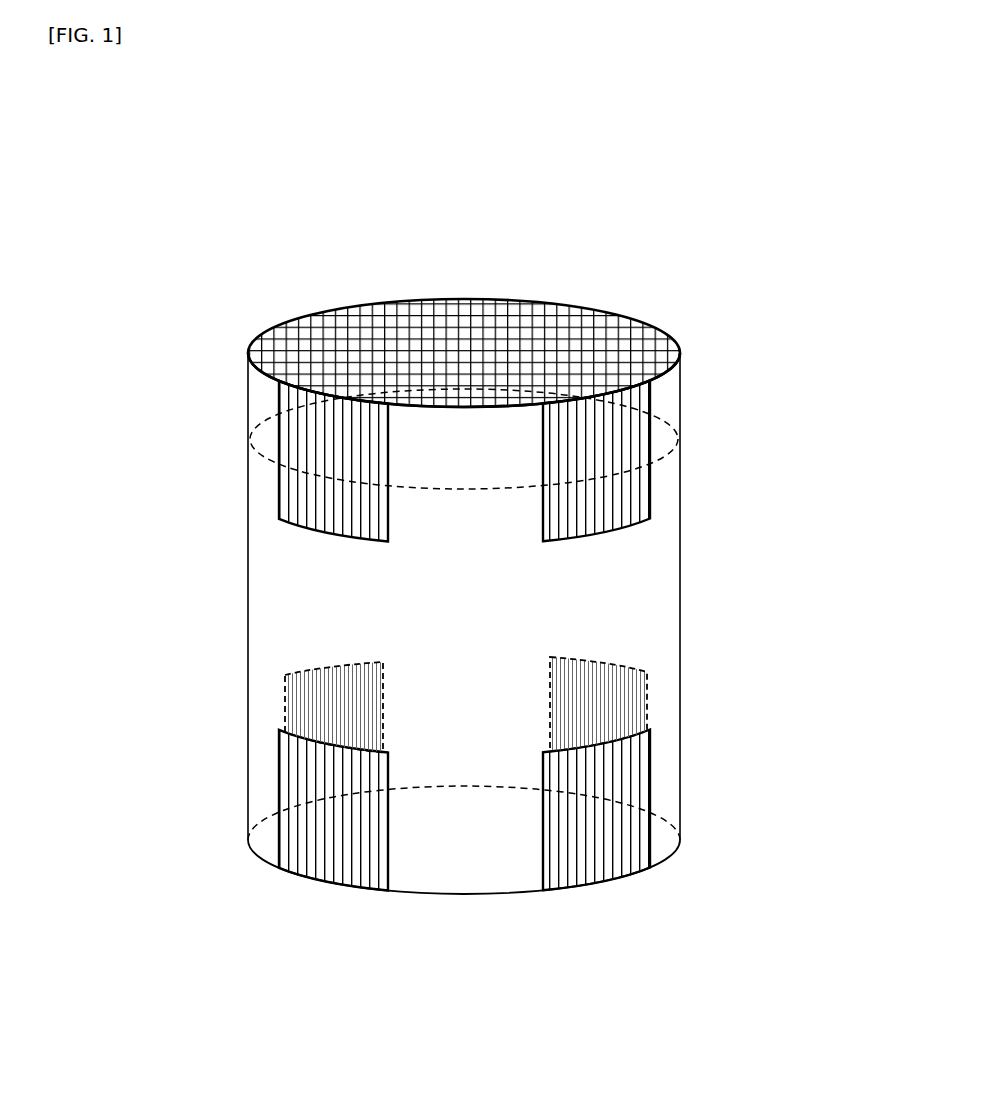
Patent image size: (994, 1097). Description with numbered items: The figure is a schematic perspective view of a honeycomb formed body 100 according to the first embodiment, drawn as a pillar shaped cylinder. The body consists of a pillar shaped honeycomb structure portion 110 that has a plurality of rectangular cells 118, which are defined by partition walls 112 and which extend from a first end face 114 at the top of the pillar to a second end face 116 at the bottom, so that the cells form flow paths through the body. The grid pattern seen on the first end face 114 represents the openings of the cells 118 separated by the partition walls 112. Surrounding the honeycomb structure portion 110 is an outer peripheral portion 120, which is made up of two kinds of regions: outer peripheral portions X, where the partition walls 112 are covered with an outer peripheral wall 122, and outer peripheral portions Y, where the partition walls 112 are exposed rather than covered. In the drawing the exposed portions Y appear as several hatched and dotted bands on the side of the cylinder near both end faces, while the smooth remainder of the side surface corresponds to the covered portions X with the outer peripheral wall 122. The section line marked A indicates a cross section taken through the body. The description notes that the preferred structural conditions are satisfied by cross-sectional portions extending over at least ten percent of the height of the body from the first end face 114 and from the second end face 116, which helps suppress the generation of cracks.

The honeycomb formed body 100 is at (257, 180).
The pillar shaped honeycomb structure portion 110 is at (357, 284).
The partition walls 112 is at (477, 310).
The first end face 114 is at (580, 305).
The second end face 116 is at (422, 893).
The rectangular cells 118 is at (426, 335).
The outer peripheral portion 120 is at (230, 575).
The outer peripheral wall 122 is at (680, 548).
The outer peripheral portions X is at (481, 870).
The outer peripheral portions Y is at (287, 398).
The section line A- A is at (248, 438).